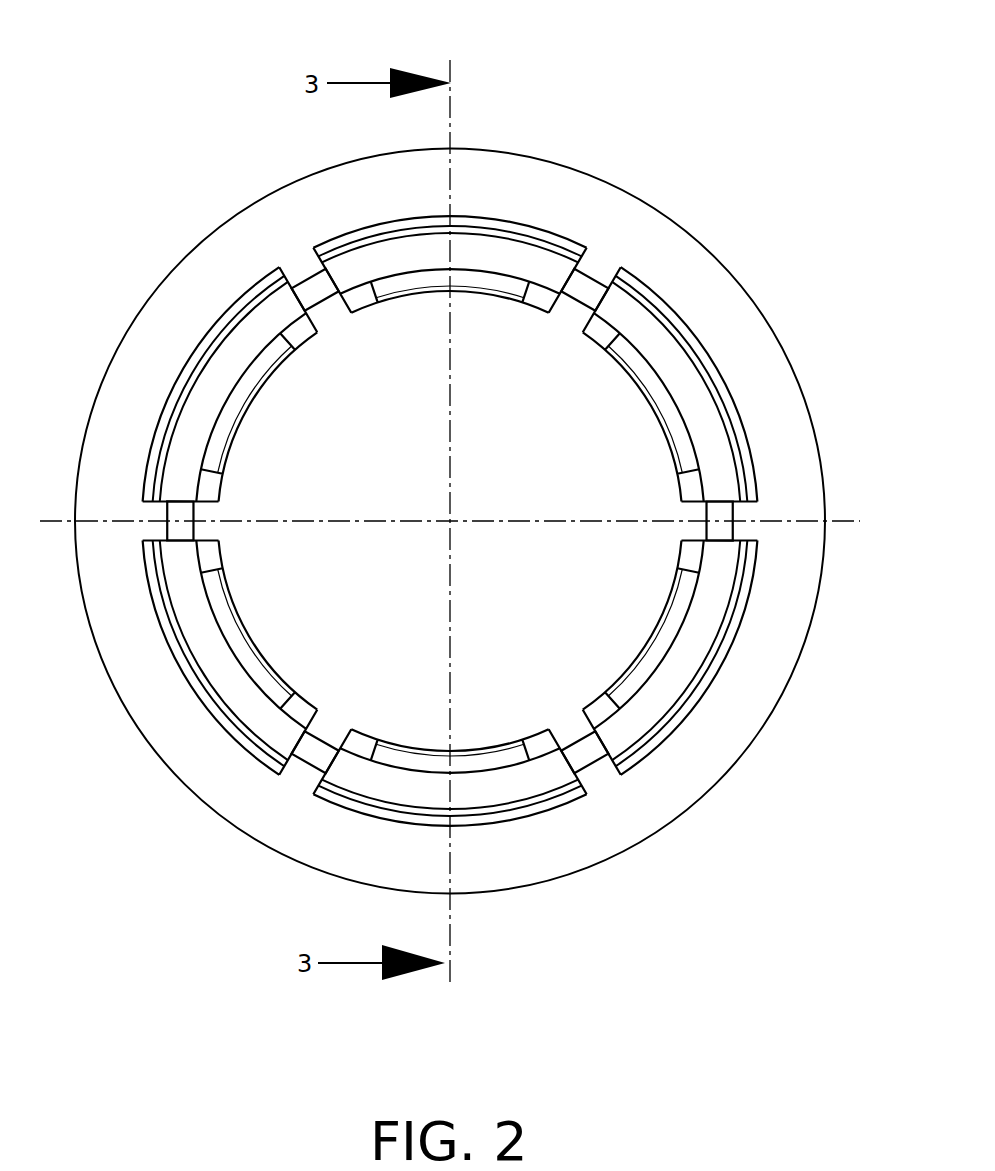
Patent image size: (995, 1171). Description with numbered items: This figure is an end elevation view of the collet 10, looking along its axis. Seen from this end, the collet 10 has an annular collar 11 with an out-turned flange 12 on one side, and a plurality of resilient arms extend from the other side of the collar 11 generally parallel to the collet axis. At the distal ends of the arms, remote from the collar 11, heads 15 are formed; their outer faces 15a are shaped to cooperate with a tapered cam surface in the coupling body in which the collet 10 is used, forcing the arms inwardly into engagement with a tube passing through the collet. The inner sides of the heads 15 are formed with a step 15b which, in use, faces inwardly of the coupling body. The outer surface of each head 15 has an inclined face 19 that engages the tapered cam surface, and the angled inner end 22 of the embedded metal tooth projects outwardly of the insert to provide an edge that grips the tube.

The collet 10 is at (716, 65).
The annular collar 11 is at (182, 528).
The out-turned flange 12 is at (277, 212).
The head 15 is at (705, 447).
The outer face 15a is at (175, 380).
The step 15b is at (275, 355).
The inclined face 19 is at (533, 808).
The inner end of the tooth 22 is at (465, 750).